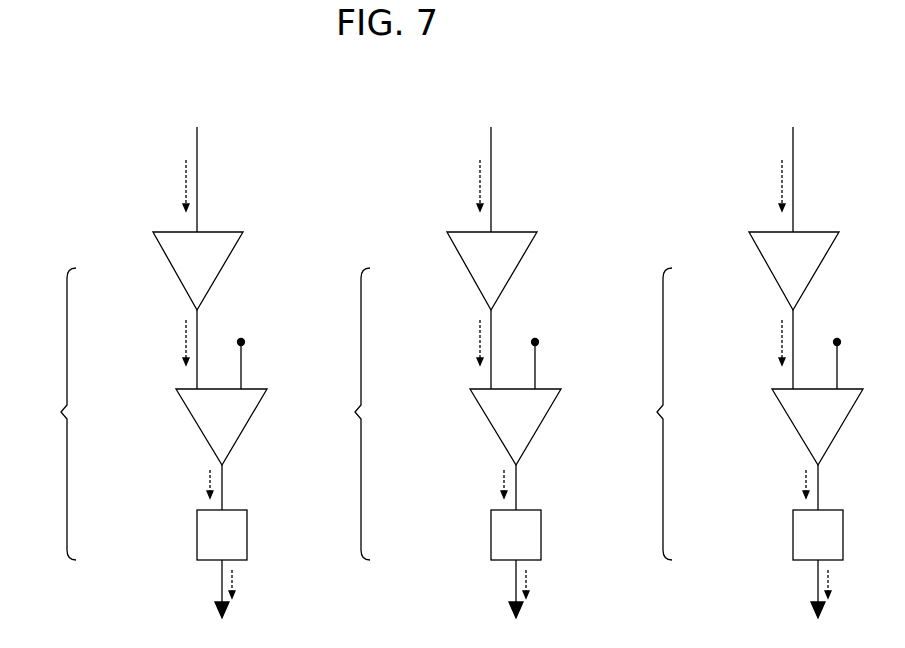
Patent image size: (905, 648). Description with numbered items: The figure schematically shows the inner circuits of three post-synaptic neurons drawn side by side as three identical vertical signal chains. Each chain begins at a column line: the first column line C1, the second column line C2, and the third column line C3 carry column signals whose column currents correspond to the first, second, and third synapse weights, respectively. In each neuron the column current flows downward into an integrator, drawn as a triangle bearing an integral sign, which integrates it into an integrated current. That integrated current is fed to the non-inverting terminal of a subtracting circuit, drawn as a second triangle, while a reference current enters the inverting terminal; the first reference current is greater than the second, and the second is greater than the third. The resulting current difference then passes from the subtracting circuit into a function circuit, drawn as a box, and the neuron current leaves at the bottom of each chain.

The first column line C1 is at (197, 145).
The second column line C2 is at (464, 179).
The third column line C3 is at (766, 179).